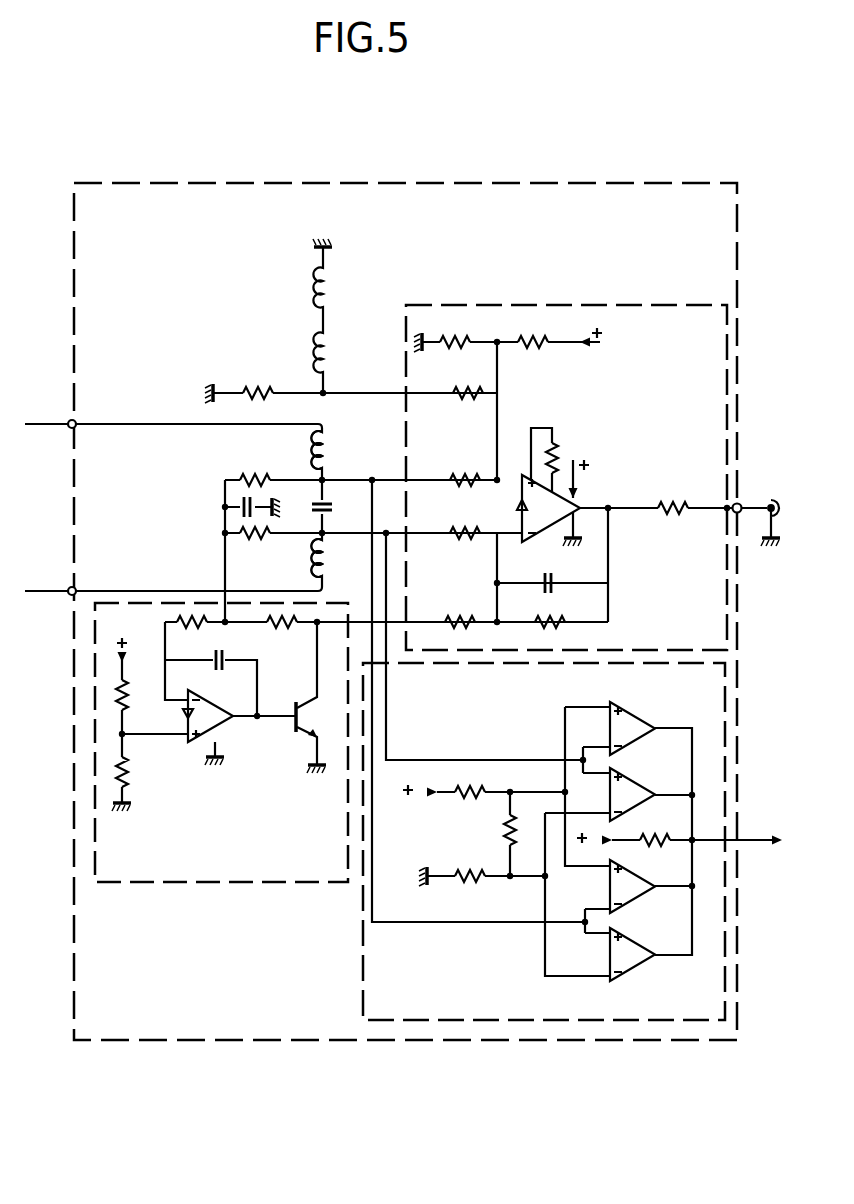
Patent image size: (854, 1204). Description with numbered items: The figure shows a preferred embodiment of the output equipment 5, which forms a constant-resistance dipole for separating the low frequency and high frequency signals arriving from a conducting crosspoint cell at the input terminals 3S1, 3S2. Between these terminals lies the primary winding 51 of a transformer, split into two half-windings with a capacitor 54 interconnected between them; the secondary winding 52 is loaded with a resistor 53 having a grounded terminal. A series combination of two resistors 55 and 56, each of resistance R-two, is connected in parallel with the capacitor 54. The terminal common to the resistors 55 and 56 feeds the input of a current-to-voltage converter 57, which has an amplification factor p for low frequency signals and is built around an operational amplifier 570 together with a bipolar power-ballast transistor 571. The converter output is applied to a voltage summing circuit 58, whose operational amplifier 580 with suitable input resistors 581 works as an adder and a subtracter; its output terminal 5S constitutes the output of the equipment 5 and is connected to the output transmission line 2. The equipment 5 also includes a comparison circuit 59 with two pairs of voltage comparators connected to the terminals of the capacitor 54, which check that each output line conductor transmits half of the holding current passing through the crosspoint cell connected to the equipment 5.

The output equipment 5 is at (492, 215).
The primary winding 51 is at (332, 446).
The secondary winding 52 is at (330, 303).
The resistor 53 is at (258, 389).
The capacitor 54 is at (330, 505).
The resistor 55 is at (255, 476).
The resistor 56 is at (255, 538).
The current-to-voltage converter 57 is at (281, 860).
The operational amplifier 570 is at (213, 709).
The bipolar power-ballast transistor 571 is at (293, 726).
The voltage summing circuit 58 is at (670, 409).
The operational amplifier 580 is at (518, 498).
The input resistors 581 is at (452, 527).
The comparison circuit 59 is at (488, 995).
The output terminal 5S is at (737, 505).
The output transmission line 2 is at (771, 516).
The input signal terminal 3S1 is at (68, 429).
The input signal terminal 3S2 is at (69, 585).